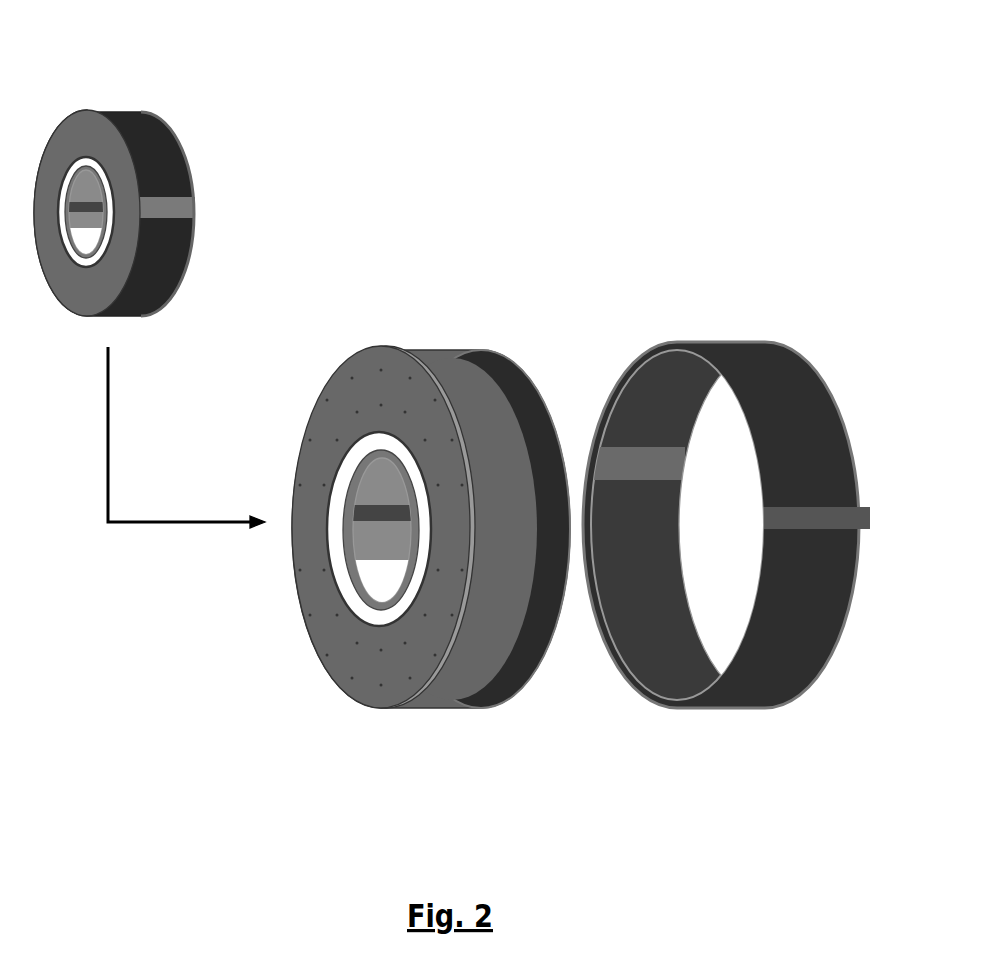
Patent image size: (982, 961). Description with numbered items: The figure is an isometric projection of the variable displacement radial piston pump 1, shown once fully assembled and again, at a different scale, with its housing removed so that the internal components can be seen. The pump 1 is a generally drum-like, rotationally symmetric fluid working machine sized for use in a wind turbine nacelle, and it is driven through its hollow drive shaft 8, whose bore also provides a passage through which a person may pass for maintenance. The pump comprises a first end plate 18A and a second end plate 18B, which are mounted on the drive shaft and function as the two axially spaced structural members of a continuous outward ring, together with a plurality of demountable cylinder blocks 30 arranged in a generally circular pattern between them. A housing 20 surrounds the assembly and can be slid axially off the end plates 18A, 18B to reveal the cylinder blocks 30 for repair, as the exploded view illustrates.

The variable displacement radial piston pump 1 is at (257, 113).
The hollow drive shaft 8 is at (360, 568).
The first end plate 18A is at (328, 395).
The second end plate 18B is at (365, 377).
The housing 20 is at (755, 355).
The demountable cylinder blocks 30 is at (495, 660).